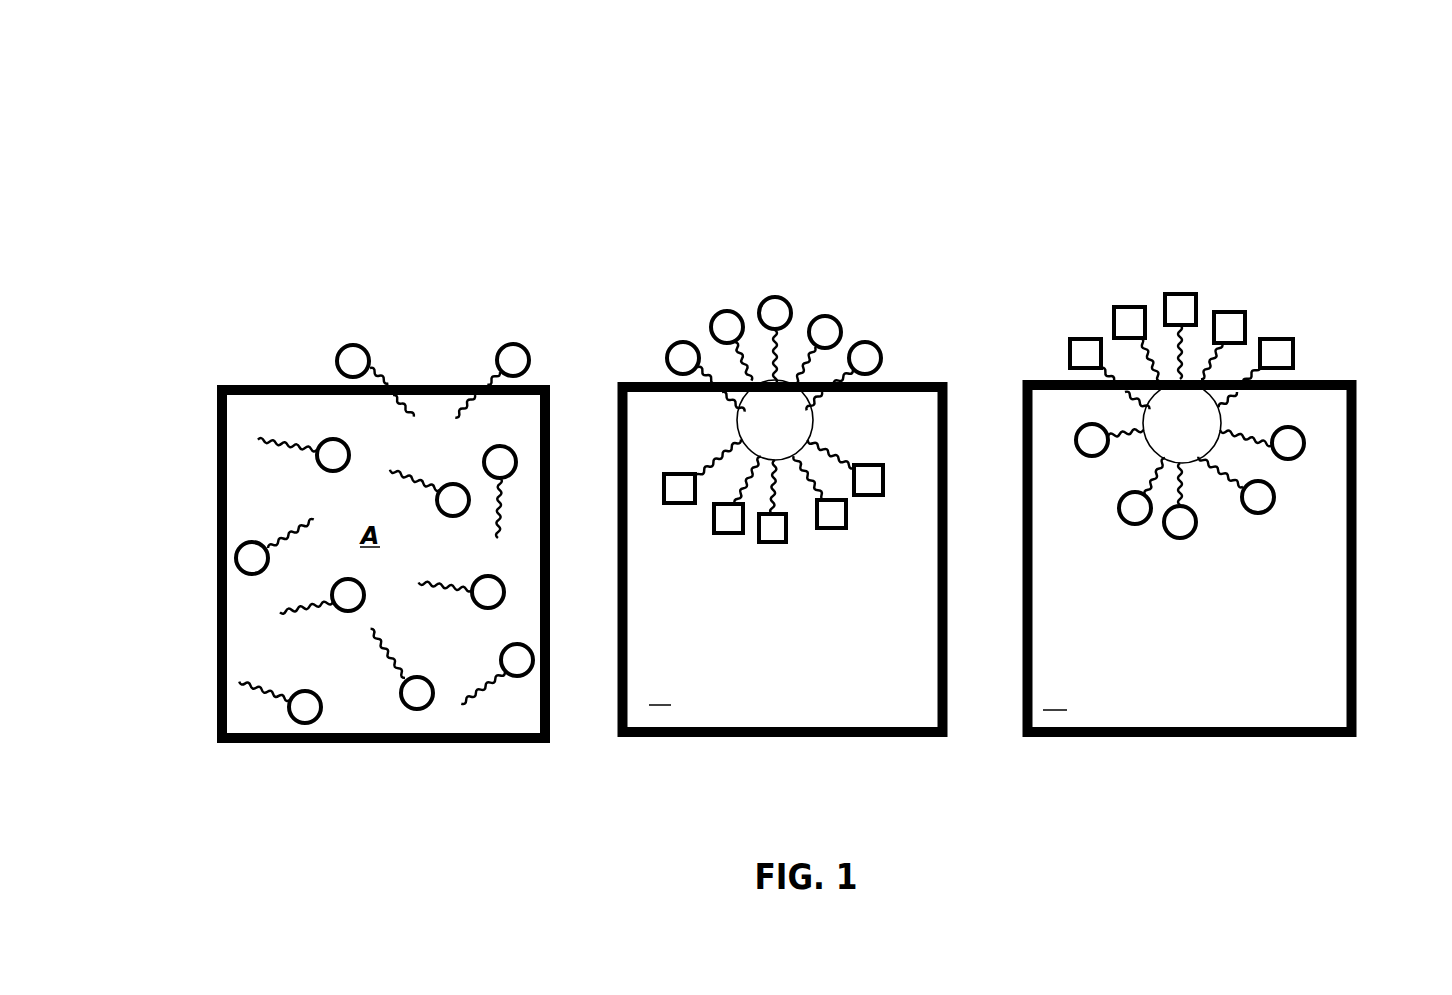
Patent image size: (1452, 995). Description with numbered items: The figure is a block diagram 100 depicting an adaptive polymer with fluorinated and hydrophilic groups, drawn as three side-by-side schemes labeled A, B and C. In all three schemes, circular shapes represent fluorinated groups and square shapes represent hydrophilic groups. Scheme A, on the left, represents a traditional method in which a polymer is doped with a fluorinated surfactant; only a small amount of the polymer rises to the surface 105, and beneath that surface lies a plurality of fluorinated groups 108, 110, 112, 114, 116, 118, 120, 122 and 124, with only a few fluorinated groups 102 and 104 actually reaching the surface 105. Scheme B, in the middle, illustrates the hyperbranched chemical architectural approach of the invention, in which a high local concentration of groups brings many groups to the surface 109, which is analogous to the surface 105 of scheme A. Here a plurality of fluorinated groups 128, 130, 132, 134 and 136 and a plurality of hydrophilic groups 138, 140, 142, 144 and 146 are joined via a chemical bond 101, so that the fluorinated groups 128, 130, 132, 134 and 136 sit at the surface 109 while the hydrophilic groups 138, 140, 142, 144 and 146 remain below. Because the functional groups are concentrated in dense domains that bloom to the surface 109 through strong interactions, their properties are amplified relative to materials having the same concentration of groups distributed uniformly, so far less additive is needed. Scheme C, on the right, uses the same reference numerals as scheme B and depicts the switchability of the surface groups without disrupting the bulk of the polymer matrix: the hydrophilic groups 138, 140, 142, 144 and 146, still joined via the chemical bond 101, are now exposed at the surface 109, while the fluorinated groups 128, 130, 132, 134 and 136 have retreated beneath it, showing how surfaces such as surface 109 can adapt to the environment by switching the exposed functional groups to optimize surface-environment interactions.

The block diagram 100 is at (224, 174).
The chemical bond 101 is at (753, 433).
The fluorinated group 102 is at (352, 343).
The fluorinated group 104 is at (505, 342).
The surface 105 is at (448, 380).
The fluorinated group 108 is at (318, 468).
The surface 109 is at (899, 380).
The fluorinated group 110 is at (450, 486).
The fluorinated group 112 is at (513, 453).
The fluorinated group 114 is at (240, 550).
The fluorinated group 116 is at (505, 584).
The fluorinated group 118 is at (335, 613).
The fluorinated group 120 is at (420, 710).
The fluorinated group 122 is at (295, 725).
The fluorinated group 124 is at (545, 708).
The fluorinated group 128 is at (668, 345).
The fluorinated group 130 is at (736, 309).
The fluorinated group 132 is at (790, 300).
The fluorinated group 134 is at (843, 323).
The fluorinated group 136 is at (880, 343).
The hydrophilic group 138 is at (680, 472).
The hydrophilic group 140 is at (720, 535).
The hydrophilic group 142 is at (770, 545).
The hydrophilic group 144 is at (848, 522).
The hydrophilic group 146 is at (885, 480).